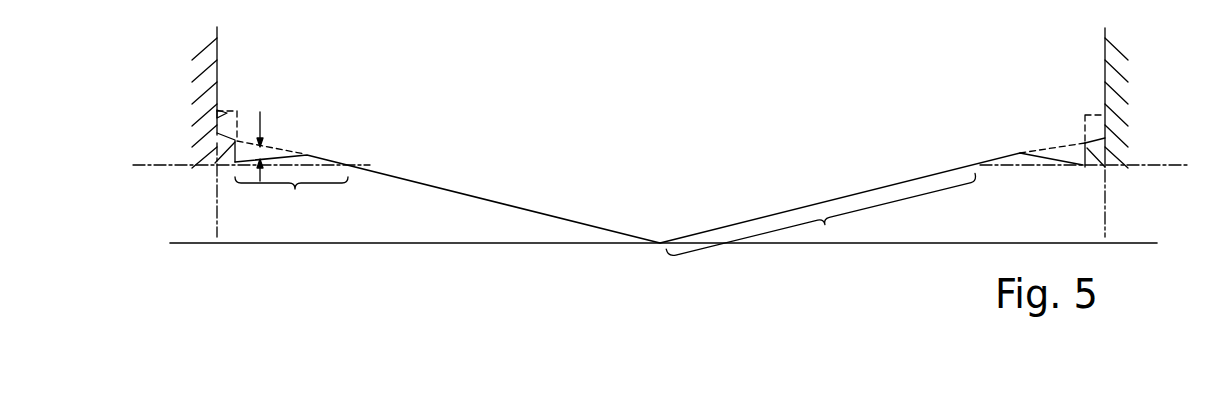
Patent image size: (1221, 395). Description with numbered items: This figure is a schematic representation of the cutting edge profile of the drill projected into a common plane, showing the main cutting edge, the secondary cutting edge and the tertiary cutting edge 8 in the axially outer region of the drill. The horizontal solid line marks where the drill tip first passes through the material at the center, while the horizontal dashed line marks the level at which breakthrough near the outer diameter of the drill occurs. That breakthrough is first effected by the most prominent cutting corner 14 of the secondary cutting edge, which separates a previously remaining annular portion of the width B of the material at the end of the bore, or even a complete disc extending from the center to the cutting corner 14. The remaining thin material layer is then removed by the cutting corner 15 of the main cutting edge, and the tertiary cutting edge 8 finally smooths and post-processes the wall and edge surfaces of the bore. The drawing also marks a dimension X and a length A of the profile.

The tertiary cutting edge 8 is at (195, 121).
The cutting corner of the secondary cutting edge 14 is at (1085, 167).
The cutting corner of the main cutting edge 15 is at (1108, 143).
The step height X is at (262, 152).
The width of the annular portion B is at (291, 199).
The slope length A is at (822, 217).